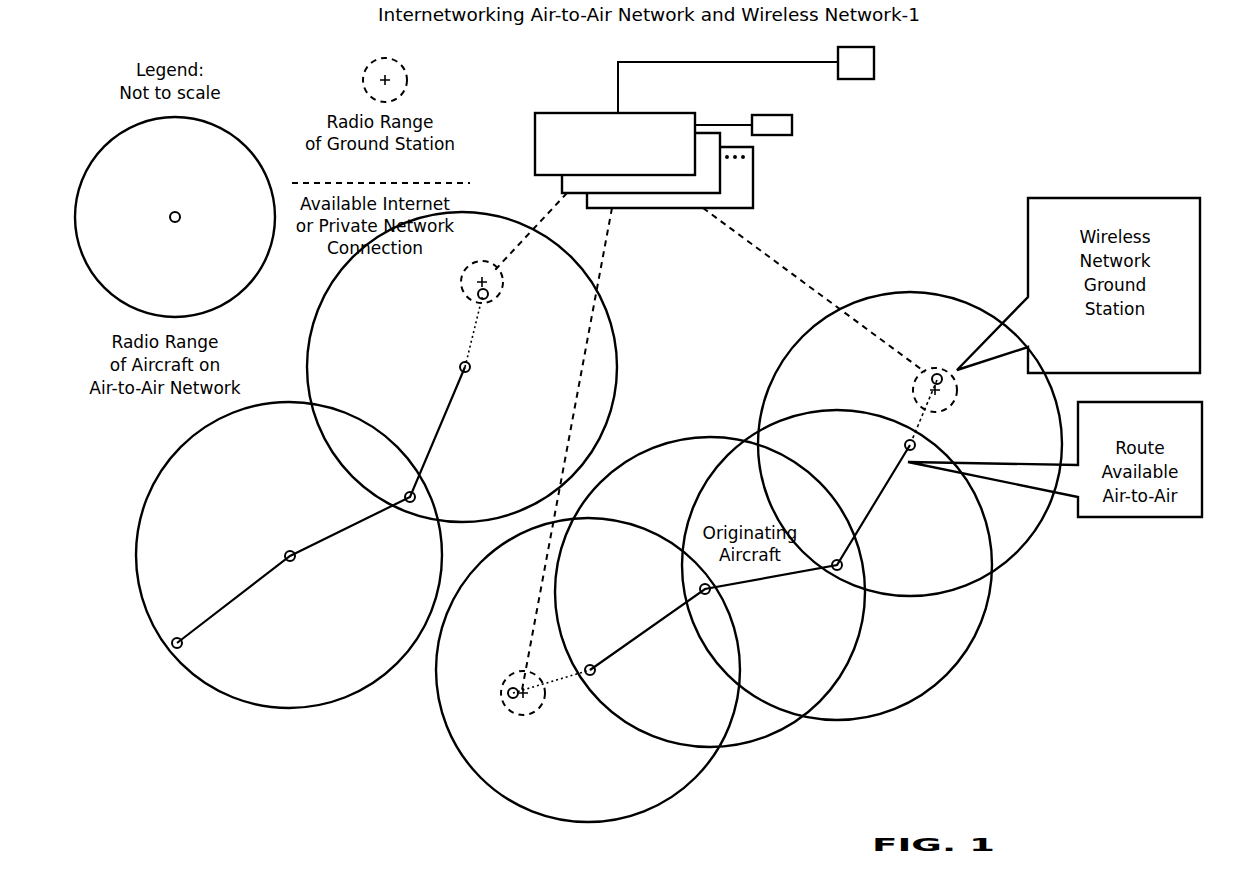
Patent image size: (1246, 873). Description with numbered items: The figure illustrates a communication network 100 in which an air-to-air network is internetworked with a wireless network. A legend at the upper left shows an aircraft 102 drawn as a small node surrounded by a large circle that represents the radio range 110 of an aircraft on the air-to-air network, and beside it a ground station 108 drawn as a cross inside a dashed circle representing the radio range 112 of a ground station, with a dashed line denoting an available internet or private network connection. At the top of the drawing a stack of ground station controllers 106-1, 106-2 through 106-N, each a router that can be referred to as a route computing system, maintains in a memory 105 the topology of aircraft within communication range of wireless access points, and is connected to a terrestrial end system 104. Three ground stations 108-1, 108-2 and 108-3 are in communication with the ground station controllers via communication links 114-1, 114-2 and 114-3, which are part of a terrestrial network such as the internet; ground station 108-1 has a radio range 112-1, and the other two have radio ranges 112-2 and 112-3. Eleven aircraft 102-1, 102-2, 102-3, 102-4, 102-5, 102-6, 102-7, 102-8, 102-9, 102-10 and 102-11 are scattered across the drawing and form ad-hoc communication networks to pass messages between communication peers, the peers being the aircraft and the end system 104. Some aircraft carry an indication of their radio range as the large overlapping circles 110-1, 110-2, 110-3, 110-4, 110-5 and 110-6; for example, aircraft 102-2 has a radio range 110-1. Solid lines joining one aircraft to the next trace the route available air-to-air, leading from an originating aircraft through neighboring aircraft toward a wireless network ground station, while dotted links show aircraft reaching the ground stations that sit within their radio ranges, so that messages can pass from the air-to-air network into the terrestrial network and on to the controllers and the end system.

The communication network 100 is at (950, 130).
The aircraft 102 is at (181, 217).
The terrestrial end system 104 is at (874, 60).
The memory 105 is at (768, 115).
The ground station controller 106-1 is at (583, 113).
The ground station controller 106-2 is at (645, 194).
The ground station controller 106-N is at (753, 196).
The ground station 108 is at (394, 80).
The ground station 108-1 is at (476, 268).
The ground station 108-2 is at (533, 712).
The ground station 108-3 is at (921, 400).
The radio range 110 is at (255, 280).
The radio range 110-1 is at (265, 712).
The radio range 110-2 is at (612, 328).
The radio range 110-3 is at (428, 652).
The radio range 110-4 is at (790, 720).
The radio range 110-5 is at (980, 623).
The radio range 110-6 is at (1033, 535).
The radio range 112 is at (386, 58).
The radio range 112-1 is at (500, 277).
The radio range 112-2 is at (510, 714).
The radio range 112-3 is at (920, 370).
The communication link 114-1 is at (567, 226).
The communication link 114-2 is at (597, 300).
The communication link 114-3 is at (797, 292).
The aircraft 102-1 is at (174, 638).
The aircraft 102-2 is at (289, 550).
The aircraft 102-3 is at (413, 503).
The aircraft 102-4 is at (470, 371).
The aircraft 102-5 is at (478, 292).
The aircraft 102-6 is at (507, 691).
The aircraft 102-7 is at (584, 665).
The aircraft 102-8 is at (709, 593).
The aircraft 102-9 is at (840, 570).
The aircraft 102-10 is at (905, 442).
The aircraft 102-11 is at (945, 380).